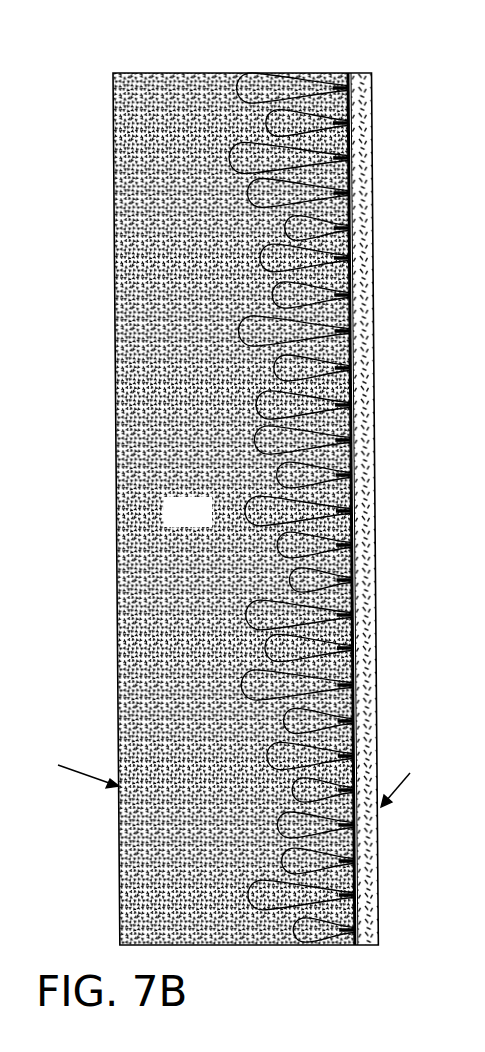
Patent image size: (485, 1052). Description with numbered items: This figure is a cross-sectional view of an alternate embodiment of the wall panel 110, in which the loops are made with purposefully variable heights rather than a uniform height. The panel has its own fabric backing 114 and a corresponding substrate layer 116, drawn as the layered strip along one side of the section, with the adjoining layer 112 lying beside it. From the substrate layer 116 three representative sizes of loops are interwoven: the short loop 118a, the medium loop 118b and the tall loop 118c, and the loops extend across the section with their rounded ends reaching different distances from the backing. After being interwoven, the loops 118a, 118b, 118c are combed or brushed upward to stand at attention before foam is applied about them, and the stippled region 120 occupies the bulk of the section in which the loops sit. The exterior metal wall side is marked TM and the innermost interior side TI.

The wall panel 110 is at (364, 58).
The substrate backing layer 112 is at (360, 322).
The fabric backing 114 is at (347, 141).
The substrate layer 116 is at (345, 380).
The short loop 118a is at (343, 587).
The medium loop 118b is at (345, 620).
The tall loop 118c is at (347, 652).
The matrix material 120 is at (198, 515).